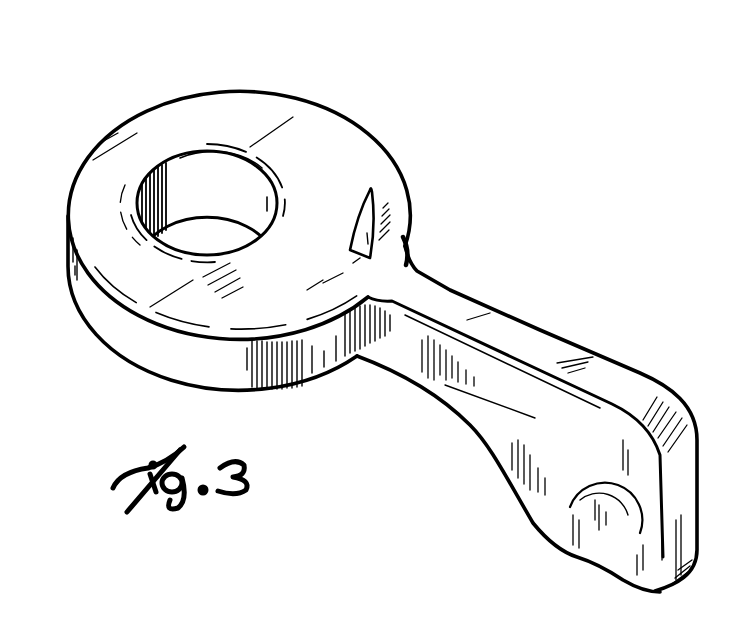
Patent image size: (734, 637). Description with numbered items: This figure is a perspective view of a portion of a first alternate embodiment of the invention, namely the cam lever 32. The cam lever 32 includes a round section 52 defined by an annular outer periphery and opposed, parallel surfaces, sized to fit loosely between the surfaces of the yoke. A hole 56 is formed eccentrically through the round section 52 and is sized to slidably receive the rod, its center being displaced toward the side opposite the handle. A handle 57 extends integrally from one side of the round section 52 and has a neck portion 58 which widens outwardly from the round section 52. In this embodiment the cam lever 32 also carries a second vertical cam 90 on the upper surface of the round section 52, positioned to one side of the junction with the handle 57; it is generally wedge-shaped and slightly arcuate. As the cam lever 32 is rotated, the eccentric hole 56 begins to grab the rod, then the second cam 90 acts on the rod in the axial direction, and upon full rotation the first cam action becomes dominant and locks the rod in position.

The cam lever 32 is at (382, 311).
The round section 52 is at (287, 100).
The hole 56 is at (190, 165).
The handle 57 is at (512, 446).
The neck portion 58 is at (405, 380).
The second vertical cam 90 is at (387, 206).